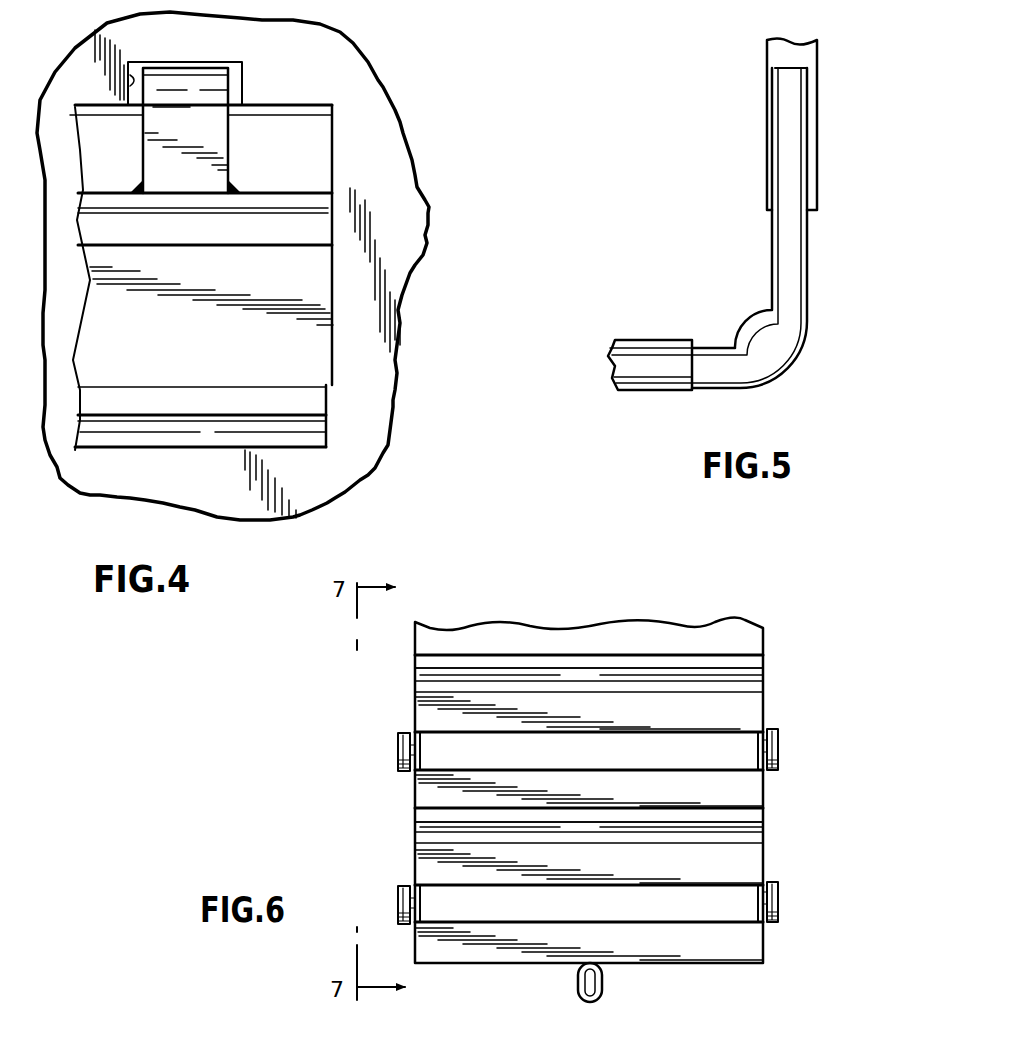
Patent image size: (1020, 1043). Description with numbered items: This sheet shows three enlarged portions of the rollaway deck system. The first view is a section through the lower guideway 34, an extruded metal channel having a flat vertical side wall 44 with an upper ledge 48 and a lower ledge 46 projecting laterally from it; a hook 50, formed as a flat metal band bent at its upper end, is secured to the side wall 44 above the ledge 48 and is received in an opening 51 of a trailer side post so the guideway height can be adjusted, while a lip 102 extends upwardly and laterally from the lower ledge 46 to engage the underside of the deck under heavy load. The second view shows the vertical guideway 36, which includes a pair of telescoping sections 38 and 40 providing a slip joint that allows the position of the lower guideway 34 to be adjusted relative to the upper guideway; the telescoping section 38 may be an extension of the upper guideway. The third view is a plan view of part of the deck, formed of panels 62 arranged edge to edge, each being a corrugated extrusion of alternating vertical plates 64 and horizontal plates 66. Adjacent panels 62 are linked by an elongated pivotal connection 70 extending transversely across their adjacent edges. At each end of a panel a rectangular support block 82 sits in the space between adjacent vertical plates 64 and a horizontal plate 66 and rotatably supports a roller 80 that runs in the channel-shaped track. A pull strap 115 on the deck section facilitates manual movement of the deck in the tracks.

In FIG. 4, the lower guideway 34 is at (323, 288).
In FIG. 5, the lower guideway 34 is at (653, 345).
In FIG. 5, the vertical guideway 36 is at (826, 190).
In FIG. 5, the telescoping section 38 is at (770, 140).
In FIG. 5, the telescoping section 40 is at (773, 285).
In FIG. 4, the side wall 44 is at (317, 145).
In FIG. 4, the lower ledge 46 is at (297, 438).
In FIG. 4, the upper ledge 48 is at (322, 200).
In FIG. 4, the hook 50 is at (215, 82).
In FIG. 4, the opening 51 is at (127, 62).
In FIG. 6, the panel 62 is at (767, 643).
In FIG. 6, the vertical plate 64 is at (586, 771).
In FIG. 6, the horizontal plate 66 is at (743, 952).
In FIG. 6, the pivotal connection 70 is at (437, 672).
In FIG. 6, the roller 80 is at (778, 892).
In FIG. 6, the support block 82 is at (757, 900).
In FIG. 4, the lip 102 is at (317, 403).
In FIG. 6, the pull strap 115 is at (603, 995).